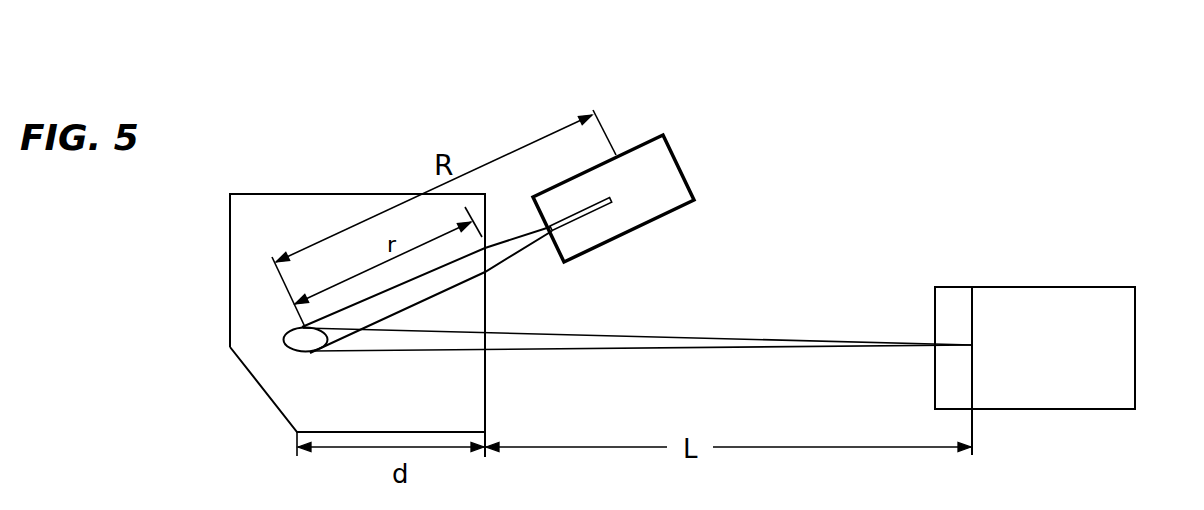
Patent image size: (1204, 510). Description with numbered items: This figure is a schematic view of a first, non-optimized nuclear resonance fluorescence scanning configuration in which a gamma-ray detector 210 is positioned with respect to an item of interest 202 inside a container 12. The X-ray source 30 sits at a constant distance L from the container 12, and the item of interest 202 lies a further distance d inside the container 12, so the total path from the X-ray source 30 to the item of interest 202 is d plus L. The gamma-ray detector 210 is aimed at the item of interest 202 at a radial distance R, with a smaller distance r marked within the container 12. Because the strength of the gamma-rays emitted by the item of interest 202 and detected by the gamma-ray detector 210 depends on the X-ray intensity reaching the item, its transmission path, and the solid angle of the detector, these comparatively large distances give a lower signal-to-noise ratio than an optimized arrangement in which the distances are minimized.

The container 12 is at (264, 205).
The item of interest 202 is at (293, 345).
The gamma-ray detector 210 is at (677, 158).
The X-ray source 30 is at (1058, 354).